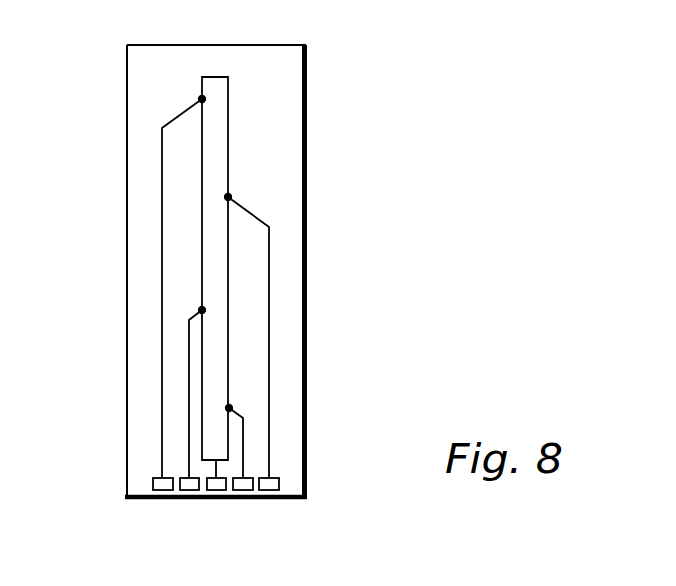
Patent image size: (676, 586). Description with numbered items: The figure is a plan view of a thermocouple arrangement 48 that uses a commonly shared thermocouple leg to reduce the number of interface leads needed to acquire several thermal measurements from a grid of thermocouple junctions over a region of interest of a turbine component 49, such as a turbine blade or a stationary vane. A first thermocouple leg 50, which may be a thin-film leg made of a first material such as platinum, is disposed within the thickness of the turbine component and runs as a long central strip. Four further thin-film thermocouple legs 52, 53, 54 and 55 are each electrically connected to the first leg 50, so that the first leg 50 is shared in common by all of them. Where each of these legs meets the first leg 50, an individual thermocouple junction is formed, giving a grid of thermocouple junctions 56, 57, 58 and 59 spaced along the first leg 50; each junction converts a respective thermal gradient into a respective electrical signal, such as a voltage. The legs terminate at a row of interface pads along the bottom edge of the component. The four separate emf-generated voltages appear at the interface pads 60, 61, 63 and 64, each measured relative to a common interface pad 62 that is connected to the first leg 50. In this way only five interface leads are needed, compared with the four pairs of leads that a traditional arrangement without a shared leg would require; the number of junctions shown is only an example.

The thermocouple arrangement 48 is at (318, 96).
The turbine component 49 is at (212, 45).
The first thermocouple leg 50 is at (228, 154).
The thermocouple leg 52 is at (269, 309).
The thermocouple leg 53 is at (243, 445).
The thermocouple leg 54 is at (162, 212).
The thermocouple leg 55 is at (189, 393).
The thermocouple junction 56 is at (228, 197).
The thermocouple junction 57 is at (229, 408).
The thermocouple junction 58 is at (202, 99).
The thermocouple junction 59 is at (202, 310).
The interface pad 60 is at (153, 484).
The interface pad 61 is at (189, 497).
The common interface pad 62 is at (216, 497).
The interface pad 63 is at (243, 497).
The interface pad 64 is at (279, 484).